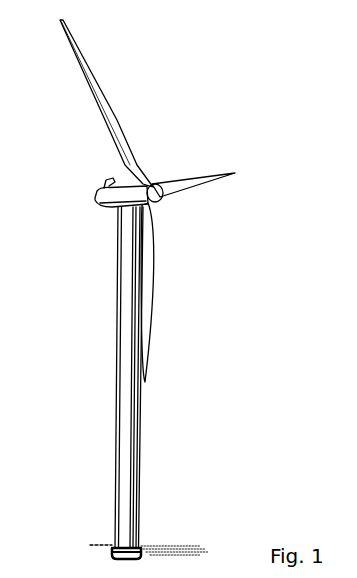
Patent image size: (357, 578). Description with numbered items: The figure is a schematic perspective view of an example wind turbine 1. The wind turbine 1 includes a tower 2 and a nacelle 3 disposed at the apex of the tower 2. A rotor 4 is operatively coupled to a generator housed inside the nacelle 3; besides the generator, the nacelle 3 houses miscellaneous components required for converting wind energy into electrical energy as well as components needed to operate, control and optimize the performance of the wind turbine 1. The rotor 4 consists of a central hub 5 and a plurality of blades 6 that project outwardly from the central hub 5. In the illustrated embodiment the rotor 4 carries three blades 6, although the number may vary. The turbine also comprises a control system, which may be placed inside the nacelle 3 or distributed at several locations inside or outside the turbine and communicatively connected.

The wind turbine 1 is at (242, 78).
The tower 2 is at (118, 355).
The nacelle 3 is at (95, 197).
The rotor 4 is at (237, 232).
The central hub 5 is at (151, 186).
The blades 6 is at (102, 108).